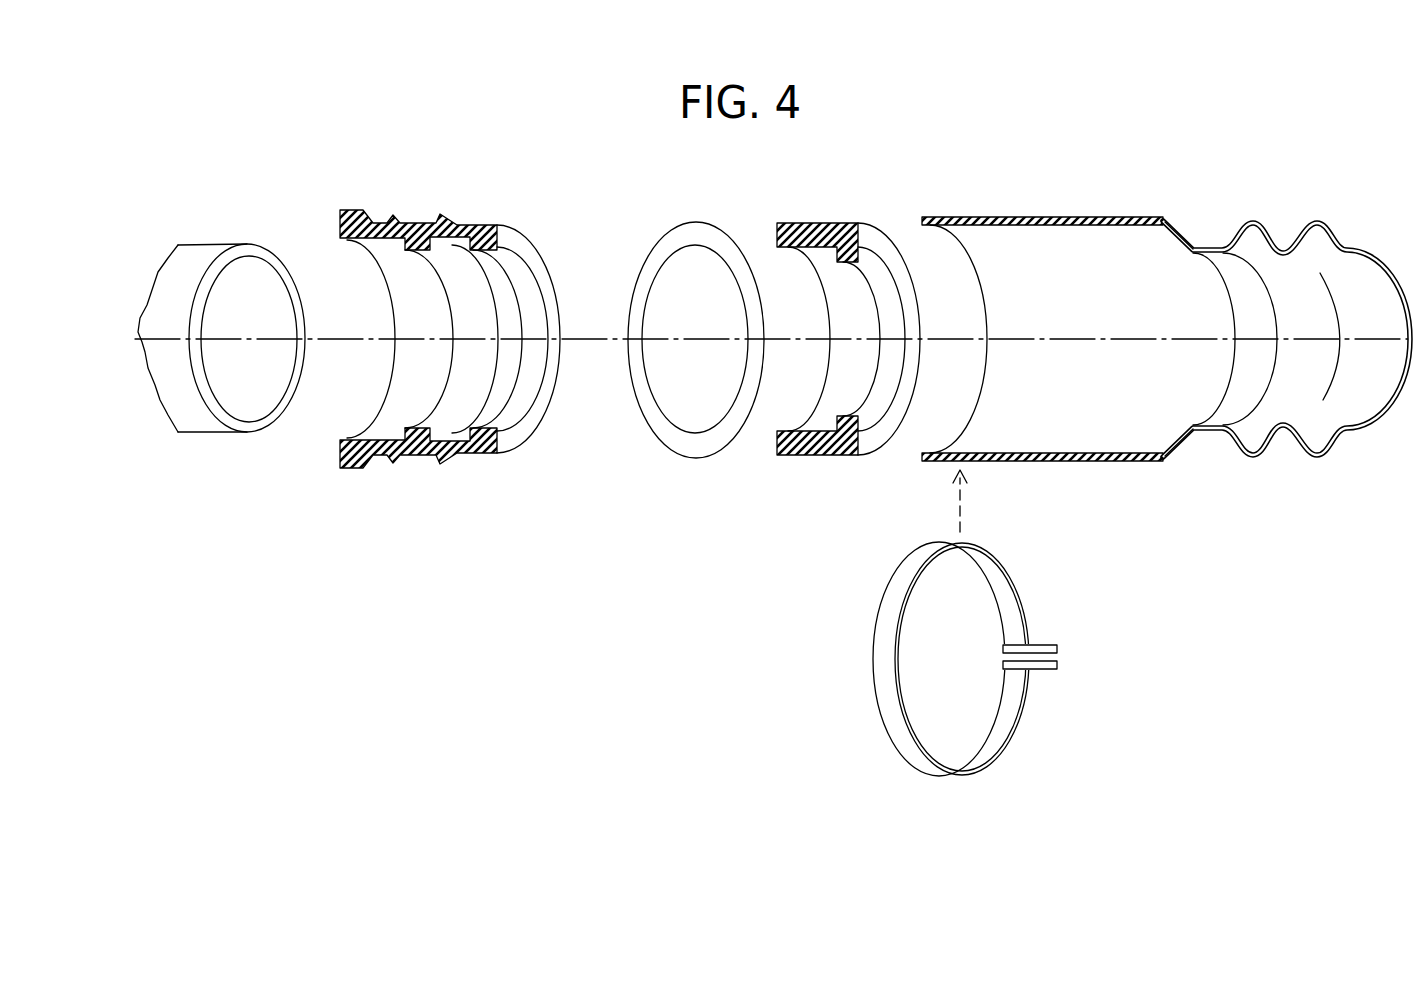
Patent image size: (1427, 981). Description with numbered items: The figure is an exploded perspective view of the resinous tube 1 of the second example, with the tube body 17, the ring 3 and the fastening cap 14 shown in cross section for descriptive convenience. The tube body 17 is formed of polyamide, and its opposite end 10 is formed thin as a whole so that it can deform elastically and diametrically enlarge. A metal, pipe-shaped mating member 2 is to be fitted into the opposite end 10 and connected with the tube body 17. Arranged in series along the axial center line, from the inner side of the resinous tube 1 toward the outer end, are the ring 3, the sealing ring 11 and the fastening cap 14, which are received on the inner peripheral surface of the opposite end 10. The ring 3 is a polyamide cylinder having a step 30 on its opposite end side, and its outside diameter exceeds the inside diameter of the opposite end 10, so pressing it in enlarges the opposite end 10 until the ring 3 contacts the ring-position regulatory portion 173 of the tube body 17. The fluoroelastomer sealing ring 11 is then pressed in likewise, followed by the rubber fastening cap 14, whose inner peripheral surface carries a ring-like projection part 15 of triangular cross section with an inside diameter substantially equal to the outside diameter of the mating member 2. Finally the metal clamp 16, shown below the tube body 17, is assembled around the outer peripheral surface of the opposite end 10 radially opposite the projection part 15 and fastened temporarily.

The resinous tube 1 is at (1166, 281).
The mating member 2 is at (197, 262).
The ring 3 is at (848, 338).
The opposite end 10 is at (998, 218).
The sealing ring 11 is at (695, 233).
The fastening cap 14 is at (450, 312).
The projection part 15 is at (452, 240).
The clamp 16 is at (888, 678).
The tube body 17 is at (1286, 304).
The step 30 is at (817, 444).
The ring-position regulatory portion 173 is at (1182, 236).